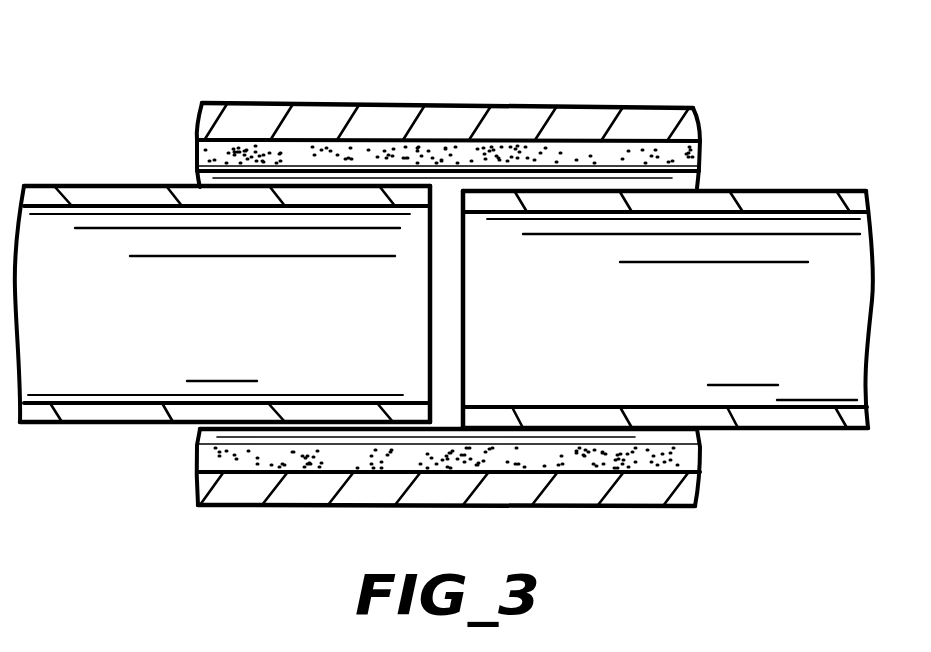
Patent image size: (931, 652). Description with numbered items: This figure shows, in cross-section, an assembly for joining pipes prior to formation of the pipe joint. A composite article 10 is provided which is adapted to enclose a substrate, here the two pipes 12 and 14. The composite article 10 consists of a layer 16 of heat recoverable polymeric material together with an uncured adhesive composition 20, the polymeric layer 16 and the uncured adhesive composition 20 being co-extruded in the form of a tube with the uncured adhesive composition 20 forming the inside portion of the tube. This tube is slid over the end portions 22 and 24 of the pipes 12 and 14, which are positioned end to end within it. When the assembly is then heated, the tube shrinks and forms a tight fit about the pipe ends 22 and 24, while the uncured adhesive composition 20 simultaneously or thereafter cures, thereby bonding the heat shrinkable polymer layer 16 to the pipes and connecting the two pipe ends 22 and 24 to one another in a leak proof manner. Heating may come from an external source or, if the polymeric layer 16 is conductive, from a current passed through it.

The composite article 10 is at (476, 104).
The pipe 12 is at (137, 410).
The pipe 14 is at (752, 418).
The layer of heat recoverable polymeric material 16 is at (197, 122).
The uncured adhesive composition 20 is at (700, 163).
The end portion of pipe 22 is at (430, 350).
The end portion of pipe 24 is at (462, 300).